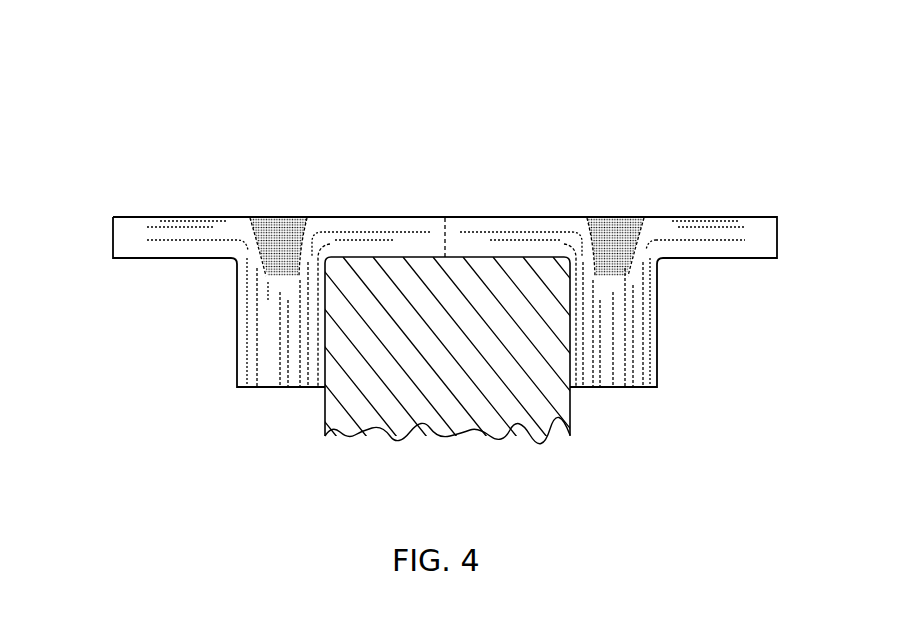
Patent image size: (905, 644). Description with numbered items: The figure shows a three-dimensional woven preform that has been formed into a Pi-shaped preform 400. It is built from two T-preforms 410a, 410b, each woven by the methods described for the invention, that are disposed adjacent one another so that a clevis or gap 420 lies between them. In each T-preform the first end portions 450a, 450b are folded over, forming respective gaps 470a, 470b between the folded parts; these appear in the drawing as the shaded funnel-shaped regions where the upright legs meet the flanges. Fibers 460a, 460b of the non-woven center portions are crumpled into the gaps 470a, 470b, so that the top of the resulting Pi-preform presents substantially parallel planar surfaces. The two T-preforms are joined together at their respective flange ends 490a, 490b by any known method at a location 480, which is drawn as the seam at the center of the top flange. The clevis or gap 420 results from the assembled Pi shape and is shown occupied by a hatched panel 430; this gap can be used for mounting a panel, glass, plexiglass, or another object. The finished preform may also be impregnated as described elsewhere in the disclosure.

The Pi-shaped preform 400 is at (163, 128).
The T-preform 410a is at (143, 217).
The T-preform 410b is at (730, 217).
The clevis or gap 420 is at (378, 358).
The panel 430 is at (523, 383).
The first end portion 450a is at (277, 275).
The first end portion 450b is at (613, 278).
The fibers of non-woven center portion 460a is at (267, 217).
The fibers of non-woven center portion 460b is at (622, 217).
The gap 470a is at (276, 252).
The gap 470b is at (614, 250).
The location 480 is at (445, 217).
The flange end 490a is at (408, 217).
The flange end 490b is at (487, 217).